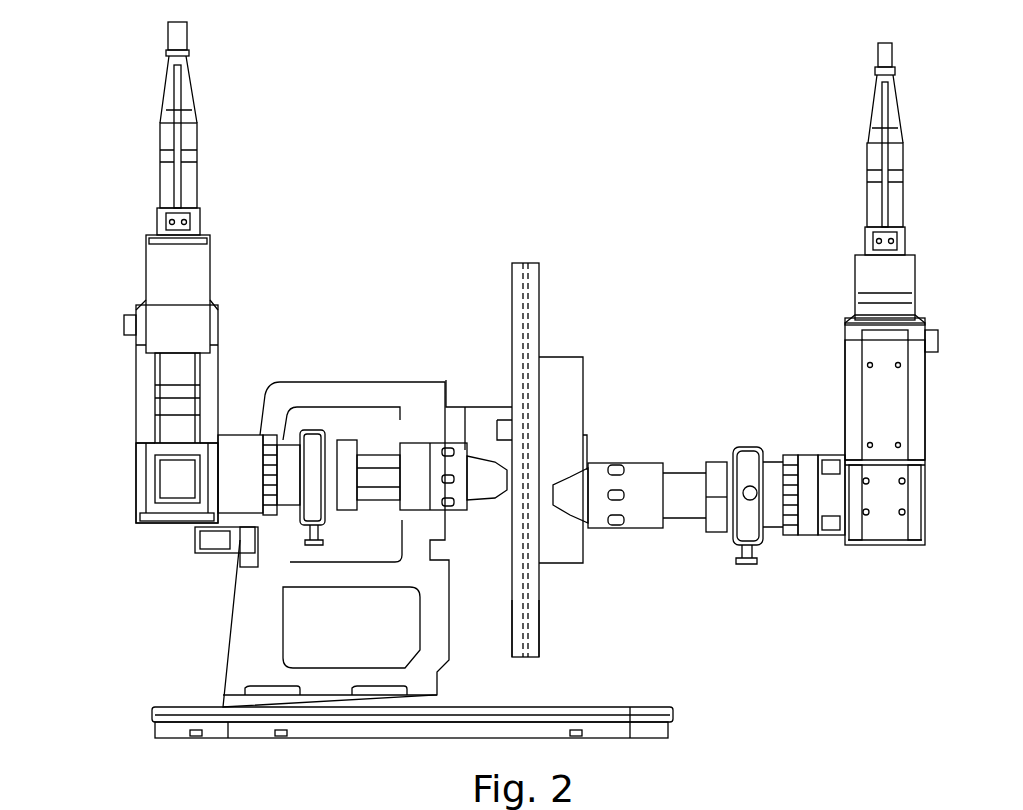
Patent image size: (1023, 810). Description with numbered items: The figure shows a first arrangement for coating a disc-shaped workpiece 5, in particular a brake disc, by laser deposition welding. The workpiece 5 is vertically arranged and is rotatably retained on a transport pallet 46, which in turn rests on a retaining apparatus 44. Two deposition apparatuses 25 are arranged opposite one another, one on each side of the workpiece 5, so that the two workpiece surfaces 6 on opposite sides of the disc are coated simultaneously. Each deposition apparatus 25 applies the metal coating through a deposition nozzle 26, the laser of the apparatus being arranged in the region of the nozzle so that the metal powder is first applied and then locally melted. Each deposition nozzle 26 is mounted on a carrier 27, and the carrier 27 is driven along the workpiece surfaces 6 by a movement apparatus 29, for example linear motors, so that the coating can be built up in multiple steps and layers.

The workpiece 5 is at (540, 303).
The workpiece surfaces 6 is at (520, 612).
The deposition apparatus 25 is at (145, 272).
The deposition nozzle 26 is at (412, 462).
The carrier 27 is at (142, 470).
The movement apparatus 29 is at (160, 140).
The retaining apparatus 44 is at (248, 594).
The transport pallet 46 is at (158, 712).